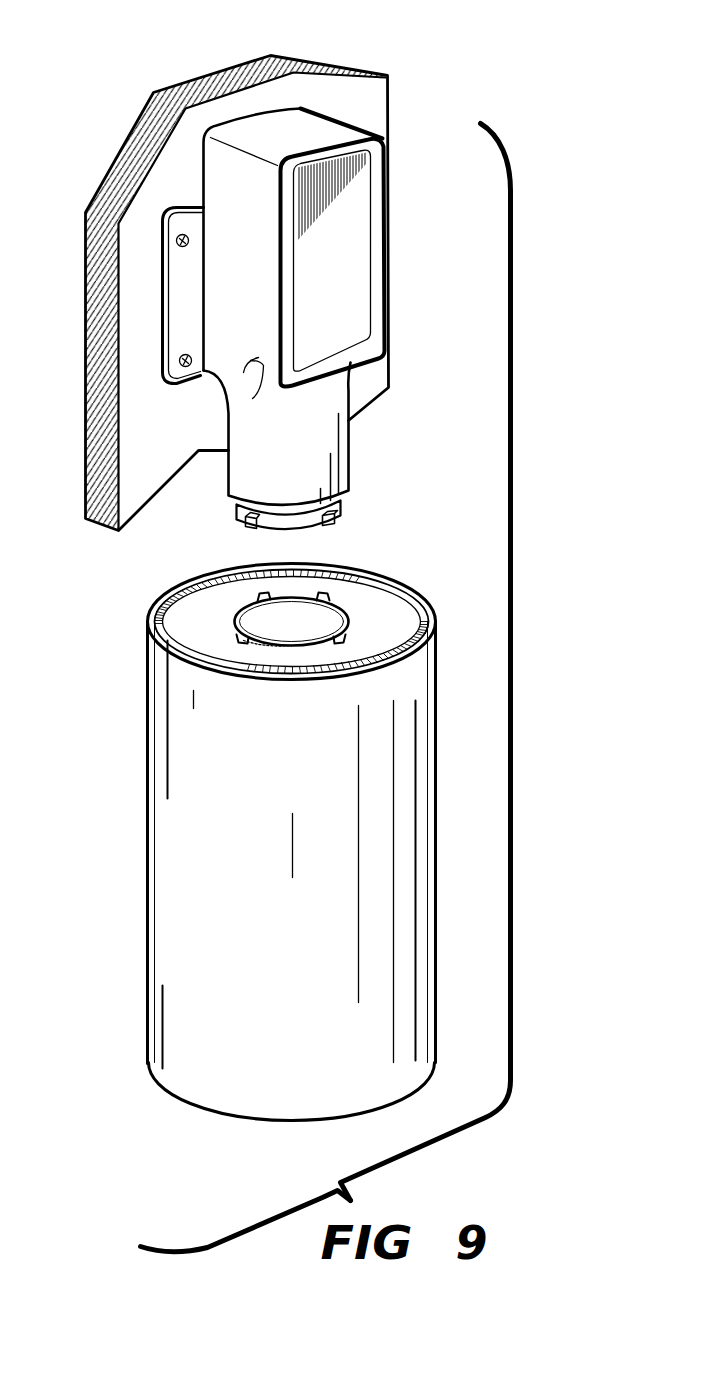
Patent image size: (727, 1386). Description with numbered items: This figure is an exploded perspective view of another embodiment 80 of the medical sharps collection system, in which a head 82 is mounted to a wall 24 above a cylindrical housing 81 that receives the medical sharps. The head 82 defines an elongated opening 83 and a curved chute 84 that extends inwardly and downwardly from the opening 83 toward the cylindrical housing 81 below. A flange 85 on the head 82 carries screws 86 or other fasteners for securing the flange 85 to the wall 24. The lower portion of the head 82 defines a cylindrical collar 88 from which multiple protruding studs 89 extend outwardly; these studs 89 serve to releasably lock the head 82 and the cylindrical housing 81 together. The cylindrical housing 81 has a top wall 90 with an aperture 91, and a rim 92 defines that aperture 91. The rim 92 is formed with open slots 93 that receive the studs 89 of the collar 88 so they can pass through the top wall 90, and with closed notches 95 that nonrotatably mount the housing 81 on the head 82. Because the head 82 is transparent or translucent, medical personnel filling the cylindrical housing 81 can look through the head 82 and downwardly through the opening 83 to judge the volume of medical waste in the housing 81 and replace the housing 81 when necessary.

The wall 24 is at (380, 102).
The embodiment of the system 80 is at (80, 584).
The cylindrical housing 81 is at (140, 752).
The head 82 is at (372, 433).
The elongated opening 83 is at (346, 265).
The curved chute 84 is at (227, 413).
The flange 85 is at (183, 303).
The screws 86 is at (186, 234).
The cylindrical collar 88 is at (263, 532).
The protruding studs 89 is at (345, 524).
The top wall 90 is at (192, 585).
The aperture 91 is at (230, 618).
The rim 92 is at (343, 623).
The open slots 93 is at (257, 565).
The closed notches 95 is at (298, 600).